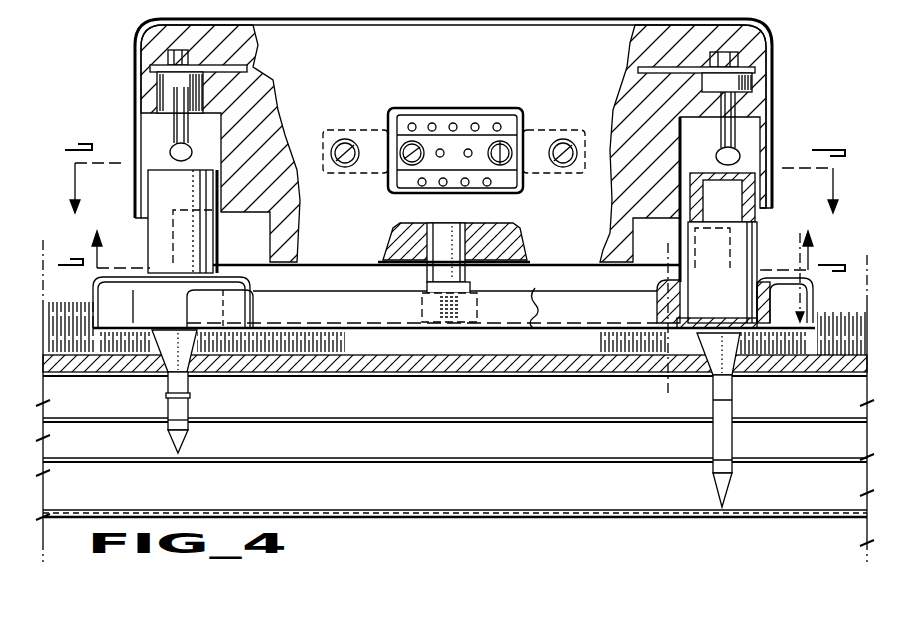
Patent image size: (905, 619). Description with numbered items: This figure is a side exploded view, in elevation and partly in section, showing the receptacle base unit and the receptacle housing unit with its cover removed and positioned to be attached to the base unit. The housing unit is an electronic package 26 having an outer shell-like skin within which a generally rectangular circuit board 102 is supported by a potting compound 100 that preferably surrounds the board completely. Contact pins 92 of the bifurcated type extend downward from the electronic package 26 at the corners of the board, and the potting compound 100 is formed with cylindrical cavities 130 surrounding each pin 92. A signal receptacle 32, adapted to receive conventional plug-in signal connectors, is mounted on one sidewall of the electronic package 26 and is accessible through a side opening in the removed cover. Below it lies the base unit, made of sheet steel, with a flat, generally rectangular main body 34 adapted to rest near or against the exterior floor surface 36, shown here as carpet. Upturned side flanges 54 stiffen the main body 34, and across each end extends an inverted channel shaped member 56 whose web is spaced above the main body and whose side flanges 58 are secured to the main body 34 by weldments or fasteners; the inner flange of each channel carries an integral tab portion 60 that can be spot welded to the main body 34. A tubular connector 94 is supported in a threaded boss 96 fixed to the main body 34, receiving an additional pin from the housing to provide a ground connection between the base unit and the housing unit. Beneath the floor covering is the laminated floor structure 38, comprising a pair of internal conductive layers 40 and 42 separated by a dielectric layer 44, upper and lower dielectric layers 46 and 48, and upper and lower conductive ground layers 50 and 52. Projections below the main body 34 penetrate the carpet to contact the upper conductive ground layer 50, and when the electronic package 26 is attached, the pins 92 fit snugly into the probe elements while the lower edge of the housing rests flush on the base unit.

The electronic package 26 is at (106, 70).
The potting compound 100 is at (272, 95).
The circuit board 102 is at (753, 70).
The contact pin 92 is at (172, 150).
The signal receptacle 32 is at (492, 112).
The cylindrical cavity 130 is at (680, 130).
The tubular connector 94 is at (440, 243).
The threaded boss 96 is at (422, 305).
The inverted channel shaped member 56 is at (222, 272).
The side flange 58 is at (93, 293).
The upturned side flange 54 is at (535, 290).
The main body 34 is at (562, 323).
The tab portion 60 is at (293, 320).
The exterior floor surface 36 is at (68, 325).
The upper conductive ground layer 50 is at (373, 370).
The laminated floor structure 38 is at (28, 406).
The upper dielectric layer 46 is at (413, 403).
The dielectric layer 44 is at (293, 448).
The internal conductive layer 40 is at (372, 420).
The internal conductive layer 42 is at (550, 460).
The lower dielectric layer 48 is at (410, 495).
The lower conductive ground layer 52 is at (372, 520).